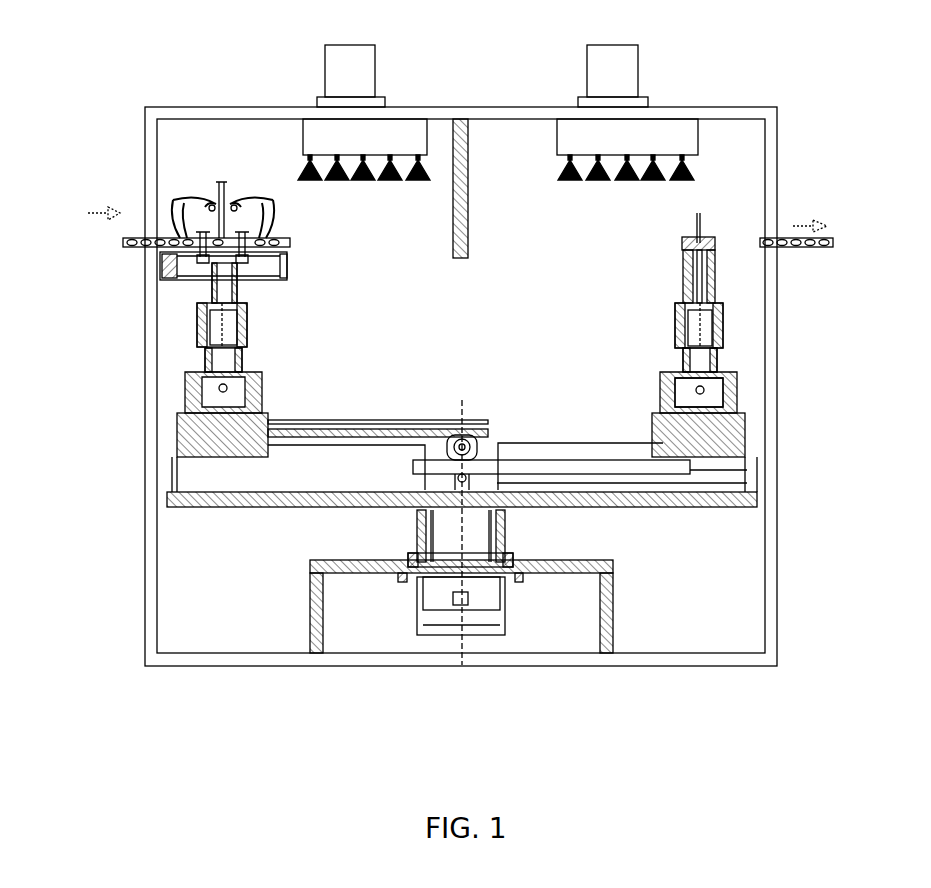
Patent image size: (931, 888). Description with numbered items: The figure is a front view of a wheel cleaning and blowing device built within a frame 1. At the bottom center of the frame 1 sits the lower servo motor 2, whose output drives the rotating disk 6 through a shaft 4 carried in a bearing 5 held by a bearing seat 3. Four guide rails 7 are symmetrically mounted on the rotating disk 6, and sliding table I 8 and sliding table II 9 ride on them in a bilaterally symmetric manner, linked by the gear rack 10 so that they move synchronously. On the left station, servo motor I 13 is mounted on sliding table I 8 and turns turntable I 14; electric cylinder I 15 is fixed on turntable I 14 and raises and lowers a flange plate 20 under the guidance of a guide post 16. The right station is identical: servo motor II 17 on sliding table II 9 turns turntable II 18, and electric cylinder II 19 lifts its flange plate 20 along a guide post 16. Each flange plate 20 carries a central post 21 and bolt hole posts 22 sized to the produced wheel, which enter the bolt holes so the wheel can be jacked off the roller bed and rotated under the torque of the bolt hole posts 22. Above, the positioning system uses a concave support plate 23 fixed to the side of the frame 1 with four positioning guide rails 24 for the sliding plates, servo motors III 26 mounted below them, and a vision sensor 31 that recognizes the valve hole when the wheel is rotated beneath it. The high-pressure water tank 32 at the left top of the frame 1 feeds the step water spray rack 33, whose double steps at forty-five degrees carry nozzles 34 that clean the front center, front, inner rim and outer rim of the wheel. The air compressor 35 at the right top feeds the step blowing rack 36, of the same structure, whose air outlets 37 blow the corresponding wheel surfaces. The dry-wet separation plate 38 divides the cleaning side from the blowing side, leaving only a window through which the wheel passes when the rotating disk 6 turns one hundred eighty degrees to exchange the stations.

The frame 1 is at (145, 548).
The lower servo motor 2 is at (415, 610).
The bearing seat 3 is at (510, 556).
The shaft 4 is at (470, 540).
The bearing 5 is at (500, 515).
The rotating disk 6 is at (167, 493).
The guide rail 7 is at (173, 468).
The sliding table I 8 is at (177, 435).
The sliding table II 9 is at (497, 460).
The gear rack 10 is at (713, 388).
The servo motor I 13 is at (187, 407).
The turntable I 14 is at (207, 350).
The electric cylinder I 15 is at (205, 325).
The guide post 16 is at (162, 262).
The servo motor II 17 is at (735, 373).
The turntable II 18 is at (722, 342).
The electric cylinder II 19 is at (707, 323).
The flange plate 20 is at (716, 246).
The central post 21 is at (697, 243).
The bolt hole post 22 is at (687, 240).
The concave support plate 23 is at (290, 279).
The positioning guide rail 24 is at (287, 260).
The servo motor III 26 is at (250, 243).
The vision sensor 31 is at (217, 183).
The high-pressure water tank 32 is at (323, 83).
The step water spray rack 33 is at (303, 135).
The nozzle 34 is at (293, 170).
The air compressor 35 is at (623, 85).
The step blowing rack 36 is at (685, 135).
The air outlet 37 is at (693, 165).
The dry-wet separation plate 38 is at (470, 230).